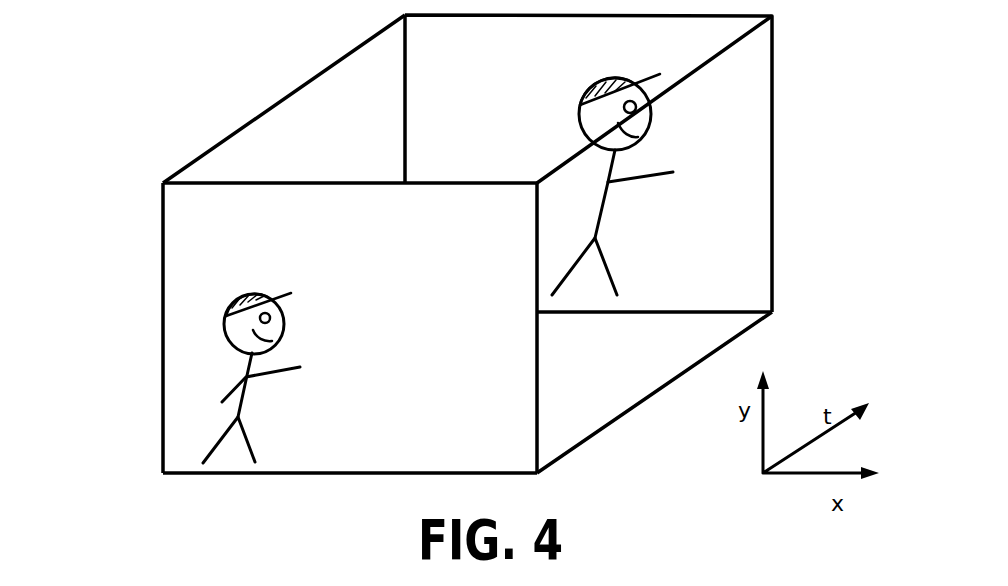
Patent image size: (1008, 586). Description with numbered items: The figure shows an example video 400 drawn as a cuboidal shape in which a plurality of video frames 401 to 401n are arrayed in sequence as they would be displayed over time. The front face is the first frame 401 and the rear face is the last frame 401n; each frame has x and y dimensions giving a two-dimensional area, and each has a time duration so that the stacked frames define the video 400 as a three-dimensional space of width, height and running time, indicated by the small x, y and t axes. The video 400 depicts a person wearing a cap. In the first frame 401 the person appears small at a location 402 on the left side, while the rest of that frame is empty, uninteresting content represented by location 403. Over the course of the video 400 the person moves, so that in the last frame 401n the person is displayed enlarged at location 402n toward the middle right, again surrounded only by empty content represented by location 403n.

The video 400 is at (266, 110).
The video frame 401 is at (162, 433).
The last video frame 401n is at (772, 127).
The location of the person 402 is at (224, 314).
The location of the person in last frame 402n is at (580, 106).
The location of empty content 403 is at (513, 456).
The location of empty content in last frame 403n is at (753, 293).